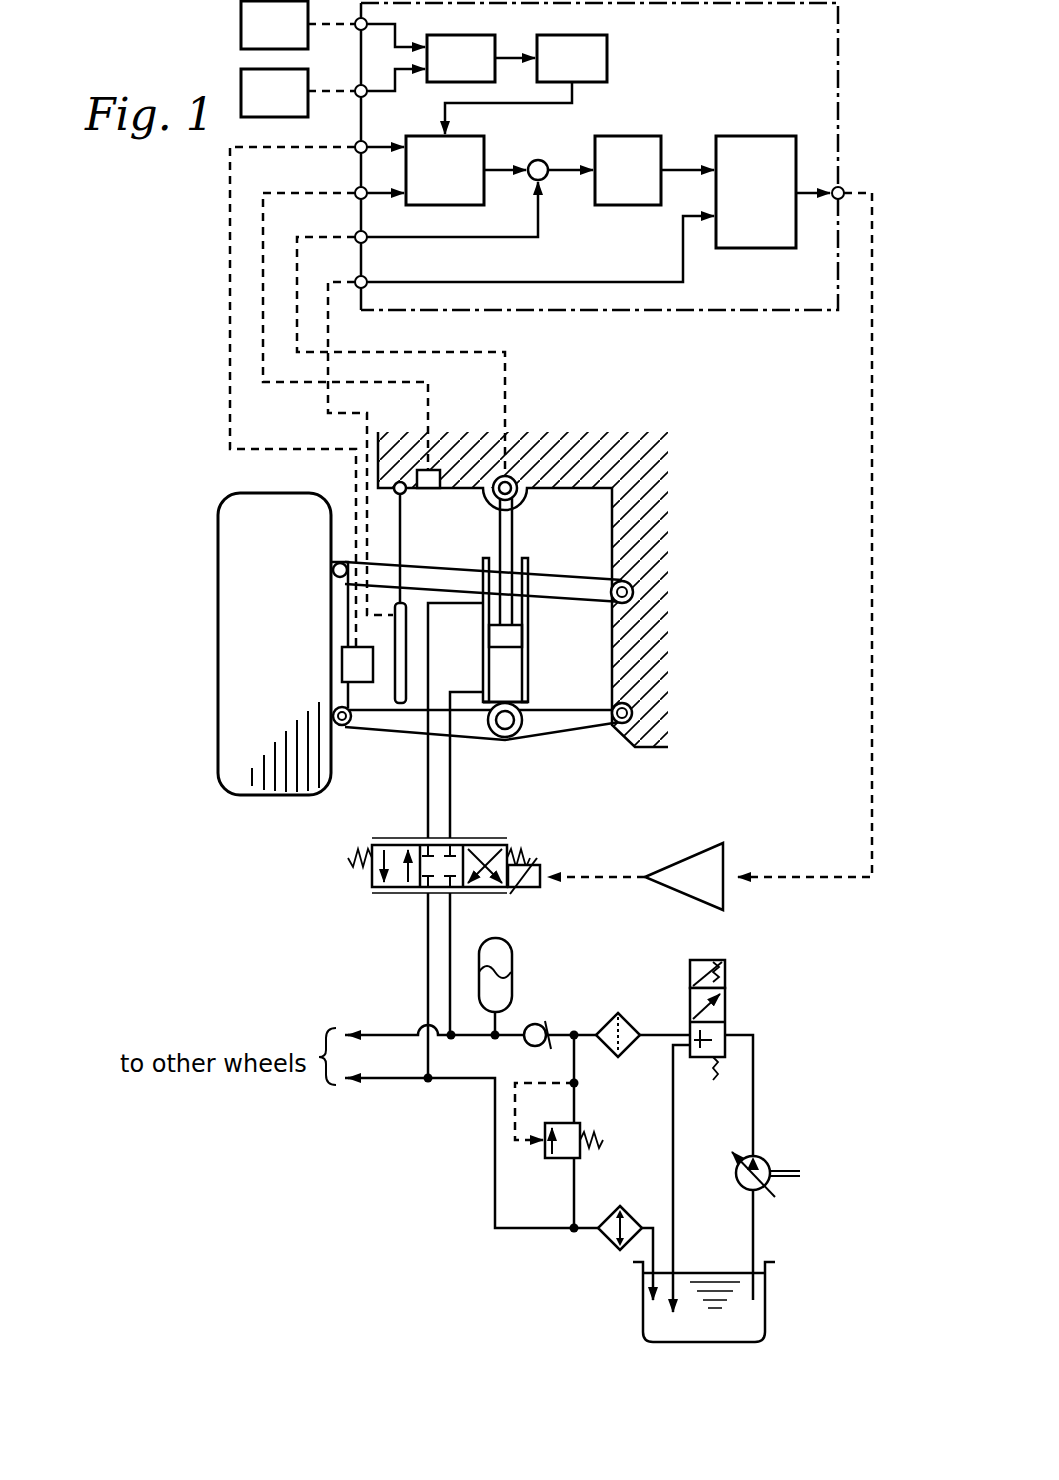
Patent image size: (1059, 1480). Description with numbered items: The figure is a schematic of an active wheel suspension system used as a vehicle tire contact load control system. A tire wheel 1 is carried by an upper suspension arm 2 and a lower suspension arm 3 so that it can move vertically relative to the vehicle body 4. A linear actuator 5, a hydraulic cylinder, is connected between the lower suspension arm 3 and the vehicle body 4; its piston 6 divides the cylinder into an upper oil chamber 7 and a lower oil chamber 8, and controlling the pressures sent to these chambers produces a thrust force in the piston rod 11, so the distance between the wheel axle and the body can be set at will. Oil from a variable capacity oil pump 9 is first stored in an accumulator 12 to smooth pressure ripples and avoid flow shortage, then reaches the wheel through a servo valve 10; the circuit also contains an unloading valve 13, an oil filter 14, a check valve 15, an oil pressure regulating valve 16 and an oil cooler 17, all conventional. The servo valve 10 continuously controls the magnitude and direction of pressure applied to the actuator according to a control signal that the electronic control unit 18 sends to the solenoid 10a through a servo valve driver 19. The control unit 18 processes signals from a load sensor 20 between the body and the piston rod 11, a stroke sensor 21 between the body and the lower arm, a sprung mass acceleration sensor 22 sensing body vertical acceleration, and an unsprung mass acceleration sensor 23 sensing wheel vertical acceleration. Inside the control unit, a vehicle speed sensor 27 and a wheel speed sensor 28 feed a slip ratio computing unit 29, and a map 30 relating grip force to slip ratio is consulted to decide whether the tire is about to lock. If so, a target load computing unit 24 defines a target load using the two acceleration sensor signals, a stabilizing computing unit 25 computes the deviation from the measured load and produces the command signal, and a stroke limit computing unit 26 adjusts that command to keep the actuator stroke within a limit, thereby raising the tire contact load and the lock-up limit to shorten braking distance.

The tire wheel 1 is at (285, 798).
The upper suspension arm 2 is at (587, 578).
The lower suspension arm 3 is at (562, 728).
The vehicle body 4 is at (650, 490).
The linear actuator 5 is at (528, 680).
The piston 6 is at (523, 640).
The upper oil chamber 7 is at (525, 558).
The lower oil chamber 8 is at (490, 662).
The variable capacity oil pump 9 is at (765, 1158).
The servo valve 10 is at (480, 838).
The solenoid 10a is at (528, 892).
The piston rod 11 is at (498, 528).
The accumulator 12 is at (514, 972).
The unloading valve 13 is at (727, 1010).
The oil filter 14 is at (628, 1020).
The check valve 15 is at (542, 1025).
The oil pressure regulating valve 16 is at (583, 1128).
The oil cooler 17 is at (630, 1210).
The electronic control unit 18 is at (712, 310).
The servo valve driver 19 is at (690, 862).
The load sensor 20 is at (523, 470).
The stroke sensor 21 is at (393, 698).
The sprung mass acceleration sensor 22 is at (433, 470).
The unsprung mass acceleration sensor 23 is at (362, 683).
The target load computing unit 24 is at (428, 187).
The stabilizing computing unit 25 is at (611, 187).
The stroke limit computing unit 26 is at (739, 209).
The vehicle speed sensor 27 is at (257, 41).
The wheel speed sensor 28 is at (257, 109).
The slip ratio computing unit 29 is at (444, 75).
The map 30 is at (555, 75).